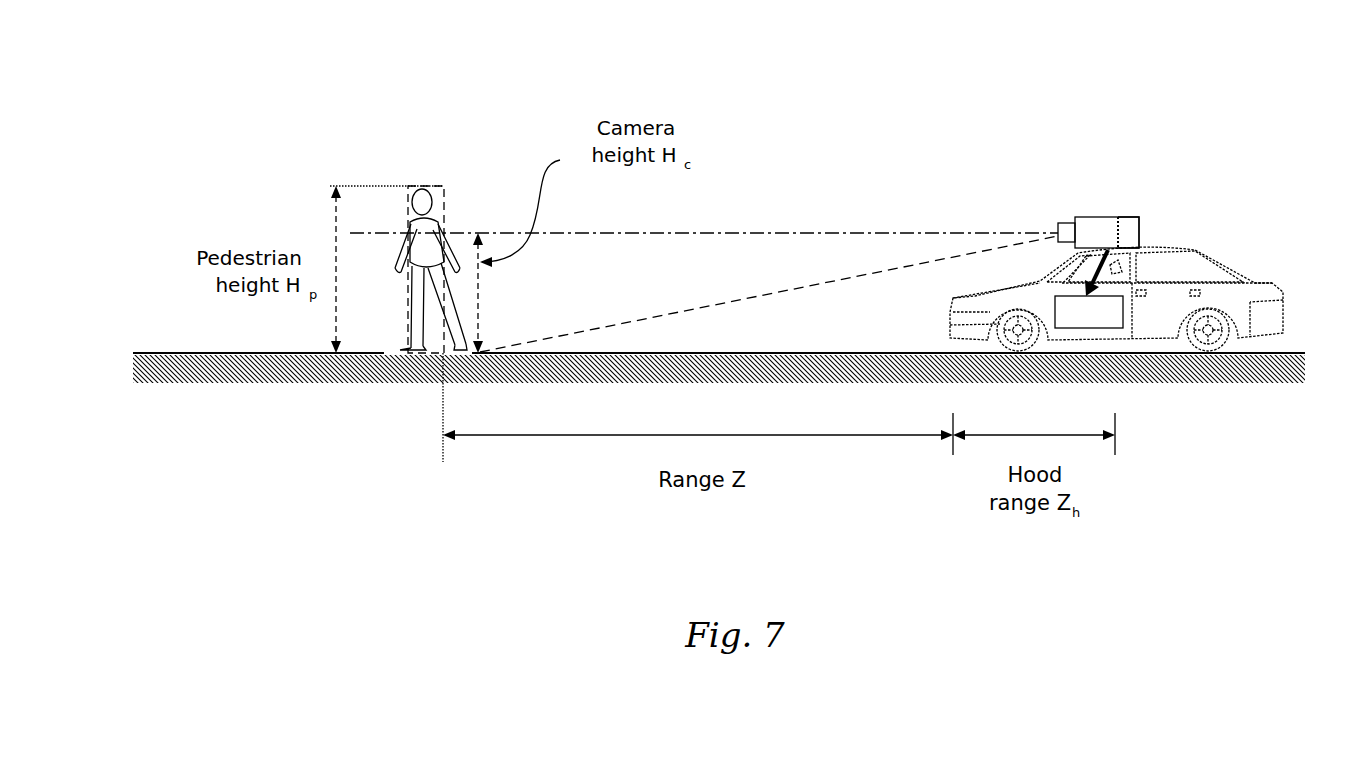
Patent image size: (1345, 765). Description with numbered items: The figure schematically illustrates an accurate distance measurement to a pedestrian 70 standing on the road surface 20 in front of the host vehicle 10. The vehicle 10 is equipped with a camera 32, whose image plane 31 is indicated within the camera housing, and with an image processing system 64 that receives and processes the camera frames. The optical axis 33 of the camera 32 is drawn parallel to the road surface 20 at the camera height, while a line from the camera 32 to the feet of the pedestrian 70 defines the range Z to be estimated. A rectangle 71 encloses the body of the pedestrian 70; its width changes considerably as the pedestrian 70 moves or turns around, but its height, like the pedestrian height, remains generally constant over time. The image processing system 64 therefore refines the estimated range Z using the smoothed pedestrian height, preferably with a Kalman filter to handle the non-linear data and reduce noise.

The vehicle 10 is at (1222, 239).
The road surface 20 is at (1272, 355).
The image plane 31 is at (1140, 229).
The camera 32 is at (1097, 228).
The optical axis 33 is at (838, 233).
The image processing system 64 is at (1093, 310).
The pedestrian 70 is at (424, 244).
The rectangle 71 is at (452, 200).